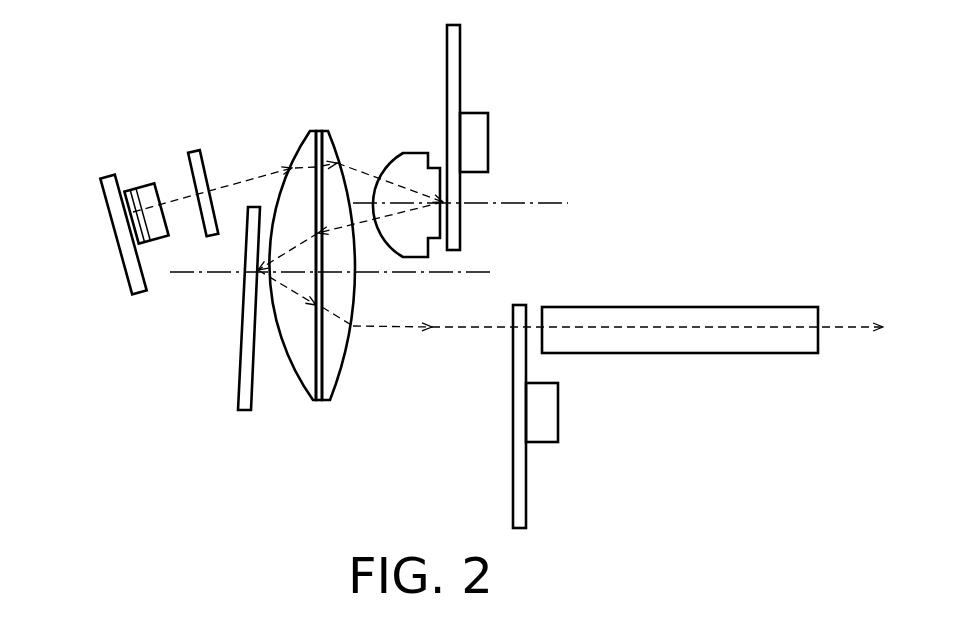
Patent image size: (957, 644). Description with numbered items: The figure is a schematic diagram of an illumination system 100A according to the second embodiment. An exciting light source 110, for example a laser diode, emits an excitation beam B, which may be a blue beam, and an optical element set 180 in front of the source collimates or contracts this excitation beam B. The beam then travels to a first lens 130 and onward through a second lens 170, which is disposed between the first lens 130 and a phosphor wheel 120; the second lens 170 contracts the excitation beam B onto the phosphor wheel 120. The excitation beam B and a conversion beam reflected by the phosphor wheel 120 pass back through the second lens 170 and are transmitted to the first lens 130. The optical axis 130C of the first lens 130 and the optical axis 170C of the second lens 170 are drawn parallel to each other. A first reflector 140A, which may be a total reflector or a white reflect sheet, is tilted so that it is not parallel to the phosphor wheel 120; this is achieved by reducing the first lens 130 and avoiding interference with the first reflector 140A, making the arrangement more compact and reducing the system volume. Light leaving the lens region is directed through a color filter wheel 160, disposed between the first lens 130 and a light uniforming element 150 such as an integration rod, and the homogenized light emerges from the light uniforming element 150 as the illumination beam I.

The illumination system 100A is at (145, 92).
The exciting light source 110 is at (102, 193).
The phosphor wheel 120 is at (455, 60).
The first lens 130 is at (314, 402).
The optical axis of the first lens 130C is at (482, 270).
The first reflector 140A is at (242, 388).
The light uniforming element 150 is at (683, 308).
The color filter wheel 160 is at (513, 478).
The second lens 170 is at (408, 153).
The optical axis of the second lens 170C is at (545, 202).
The optical element set 180 is at (196, 153).
The excitation beam B is at (242, 181).
The illumination beam I is at (846, 323).